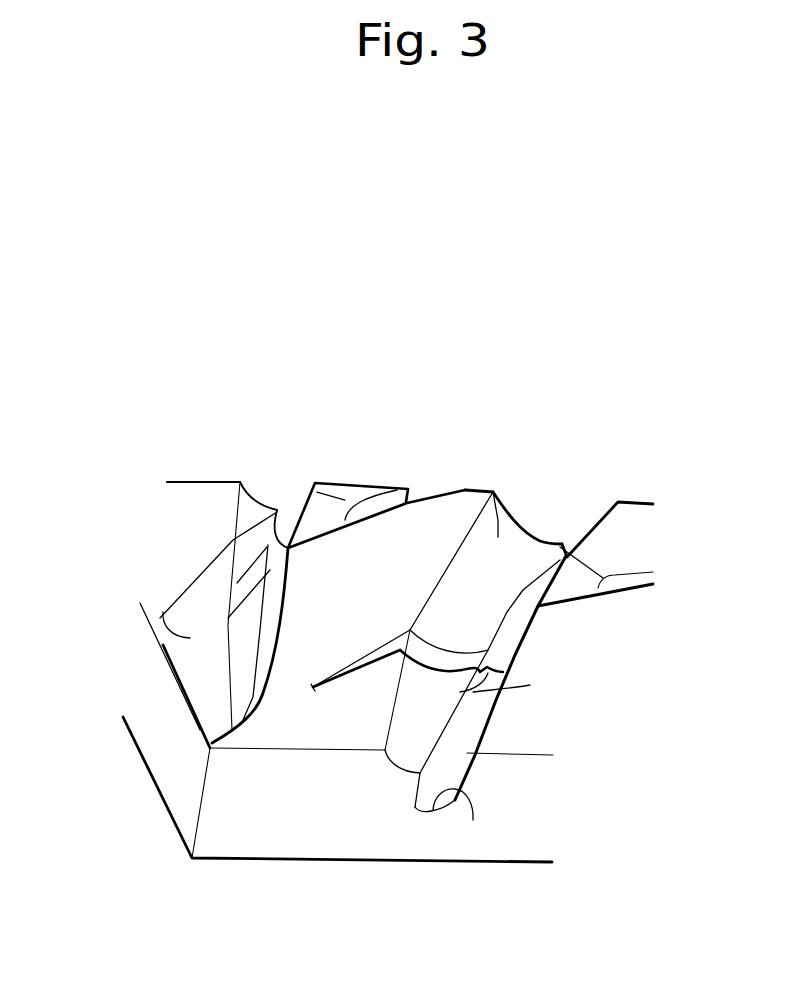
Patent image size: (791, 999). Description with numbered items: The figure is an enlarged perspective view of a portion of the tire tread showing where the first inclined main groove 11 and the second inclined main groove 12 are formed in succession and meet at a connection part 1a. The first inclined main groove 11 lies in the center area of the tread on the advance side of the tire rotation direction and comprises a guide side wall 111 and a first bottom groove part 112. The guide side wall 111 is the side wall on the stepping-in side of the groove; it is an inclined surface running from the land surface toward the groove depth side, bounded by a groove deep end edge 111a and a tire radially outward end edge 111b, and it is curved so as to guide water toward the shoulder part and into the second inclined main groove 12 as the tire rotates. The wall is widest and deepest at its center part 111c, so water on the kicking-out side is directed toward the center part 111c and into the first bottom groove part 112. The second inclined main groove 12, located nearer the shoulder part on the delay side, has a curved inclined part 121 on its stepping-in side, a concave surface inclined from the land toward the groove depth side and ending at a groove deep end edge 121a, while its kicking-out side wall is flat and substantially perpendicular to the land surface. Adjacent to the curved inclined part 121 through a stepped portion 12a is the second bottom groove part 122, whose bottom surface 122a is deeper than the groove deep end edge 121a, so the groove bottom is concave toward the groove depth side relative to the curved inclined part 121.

The connection part 1a is at (233, 540).
The first inclined main groove 11 is at (187, 613).
The guide side wall 111 is at (200, 657).
The groove deep end edge 111a is at (280, 535).
The tire radially outward end edge 111b is at (175, 672).
The center part 111c is at (158, 617).
The first bottom groove part 112 is at (238, 703).
The second inclined main groove 12 is at (478, 724).
The stepped portion 12a is at (560, 562).
The curved inclined part 121 is at (493, 492).
The groove deep end edge 121a is at (530, 685).
The second bottom groove part 122 is at (562, 548).
The bottom surface 122a is at (473, 820).